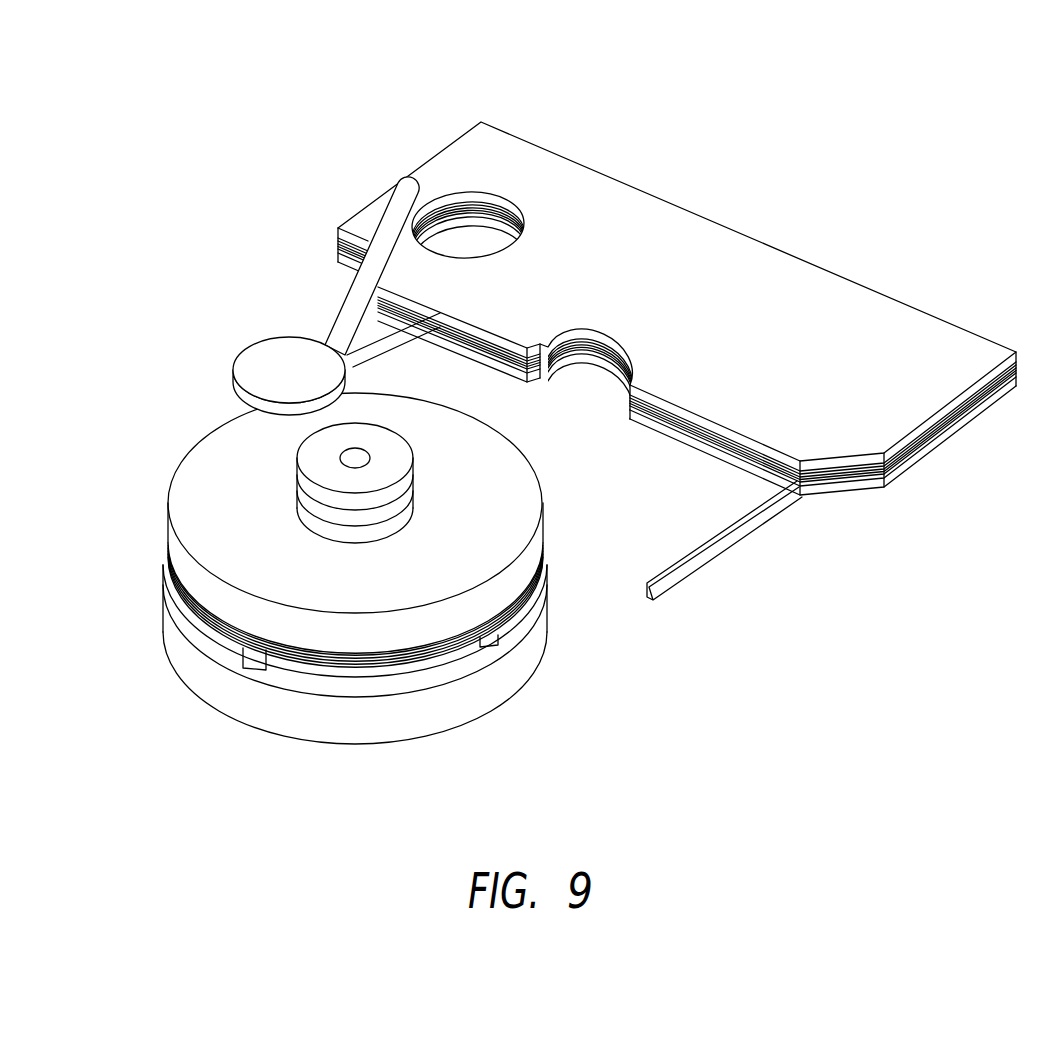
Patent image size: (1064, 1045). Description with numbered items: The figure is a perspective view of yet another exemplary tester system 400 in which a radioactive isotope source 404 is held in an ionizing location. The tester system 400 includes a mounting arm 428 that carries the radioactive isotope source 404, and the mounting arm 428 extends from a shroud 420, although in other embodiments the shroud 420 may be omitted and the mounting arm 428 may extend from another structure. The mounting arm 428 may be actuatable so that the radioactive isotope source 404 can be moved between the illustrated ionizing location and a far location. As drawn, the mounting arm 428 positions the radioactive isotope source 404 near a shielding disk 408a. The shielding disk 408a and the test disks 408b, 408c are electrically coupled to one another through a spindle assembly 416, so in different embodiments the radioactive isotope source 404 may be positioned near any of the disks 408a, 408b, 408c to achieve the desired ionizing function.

The tester system 400 is at (677, 331).
The shroud 420 is at (443, 147).
The mounting arm 428 is at (337, 317).
The radioactive isotope source 404 is at (238, 357).
The shielding disk 408a is at (192, 452).
The test disk 408b is at (168, 553).
The test disk 408c is at (162, 593).
The spindle assembly 416 is at (352, 500).